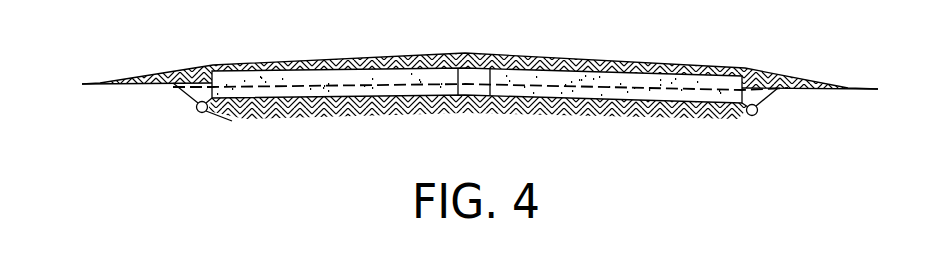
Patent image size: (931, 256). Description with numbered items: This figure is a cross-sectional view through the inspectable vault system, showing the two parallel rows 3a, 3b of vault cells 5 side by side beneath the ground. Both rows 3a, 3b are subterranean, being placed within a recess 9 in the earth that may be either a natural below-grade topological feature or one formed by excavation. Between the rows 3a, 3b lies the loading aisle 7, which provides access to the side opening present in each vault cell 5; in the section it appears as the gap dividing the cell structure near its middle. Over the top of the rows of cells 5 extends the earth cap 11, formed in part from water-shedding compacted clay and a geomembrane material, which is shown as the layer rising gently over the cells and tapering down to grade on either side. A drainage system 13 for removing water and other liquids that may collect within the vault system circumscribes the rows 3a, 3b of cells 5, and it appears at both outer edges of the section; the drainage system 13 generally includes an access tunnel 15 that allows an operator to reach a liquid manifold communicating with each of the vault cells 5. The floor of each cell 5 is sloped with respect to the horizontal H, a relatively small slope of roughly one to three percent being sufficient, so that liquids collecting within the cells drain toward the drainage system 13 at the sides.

The row of vault cells 3a is at (317, 118).
The row of vault cells 3b is at (595, 118).
The vault cell 5 is at (282, 78).
The loading aisle 7 is at (477, 99).
The recess 9 is at (243, 112).
The earth cap 11 is at (466, 62).
The drainage system 13 is at (197, 114).
The access tunnel 15 is at (208, 110).
The horizontal H is at (385, 88).